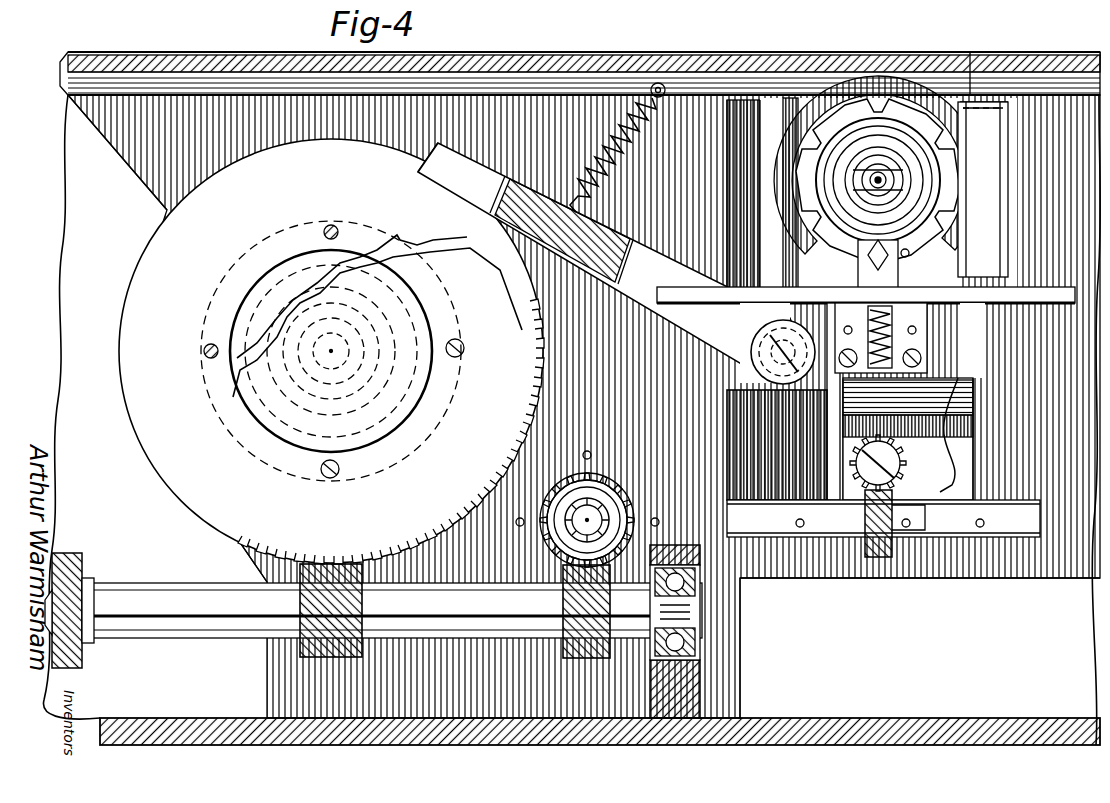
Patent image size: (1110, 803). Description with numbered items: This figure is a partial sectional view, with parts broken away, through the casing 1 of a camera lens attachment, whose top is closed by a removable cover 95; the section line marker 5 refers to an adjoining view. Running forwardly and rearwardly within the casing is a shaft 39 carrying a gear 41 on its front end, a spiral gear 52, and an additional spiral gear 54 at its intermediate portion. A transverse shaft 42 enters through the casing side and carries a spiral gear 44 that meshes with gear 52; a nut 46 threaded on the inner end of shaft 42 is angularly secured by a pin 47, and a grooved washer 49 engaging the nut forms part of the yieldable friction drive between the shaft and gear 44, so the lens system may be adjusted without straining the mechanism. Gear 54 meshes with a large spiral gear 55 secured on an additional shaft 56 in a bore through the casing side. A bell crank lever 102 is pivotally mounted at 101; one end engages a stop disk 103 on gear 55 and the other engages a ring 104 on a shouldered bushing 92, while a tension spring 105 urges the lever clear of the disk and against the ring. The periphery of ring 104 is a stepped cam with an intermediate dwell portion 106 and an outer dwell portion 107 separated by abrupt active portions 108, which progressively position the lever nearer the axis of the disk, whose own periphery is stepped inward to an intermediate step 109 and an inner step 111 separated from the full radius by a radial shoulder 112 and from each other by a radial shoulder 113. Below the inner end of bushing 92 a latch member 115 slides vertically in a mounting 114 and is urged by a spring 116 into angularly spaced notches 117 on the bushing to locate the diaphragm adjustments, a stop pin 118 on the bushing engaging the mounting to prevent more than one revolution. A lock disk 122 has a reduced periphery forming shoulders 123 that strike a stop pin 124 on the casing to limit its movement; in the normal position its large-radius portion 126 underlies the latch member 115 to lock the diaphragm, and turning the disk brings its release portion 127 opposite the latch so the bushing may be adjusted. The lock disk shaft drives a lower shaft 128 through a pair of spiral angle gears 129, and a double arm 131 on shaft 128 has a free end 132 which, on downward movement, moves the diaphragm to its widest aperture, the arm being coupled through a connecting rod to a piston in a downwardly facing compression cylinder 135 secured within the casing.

The casing 1 is at (362, 745).
The section line 5 is at (40, 34).
The shaft 39 is at (150, 590).
The gear 41 is at (70, 560).
The transverse shaft 42 is at (600, 520).
The spiral gear 44 is at (622, 500).
The nut 46 is at (565, 505).
The pin 47 is at (572, 512).
The grooved washer 49 is at (580, 519).
The spiral gear 52 is at (563, 603).
The spiral gear 54 is at (300, 600).
The large spiral gear 55 is at (270, 520).
The shaft 56 is at (310, 346).
The shouldered bushing 92 is at (900, 105).
The removable cover 95 is at (722, 60).
The pivot 101 is at (775, 365).
The bell crank lever 102 is at (690, 280).
The stop disk 103 is at (124, 300).
The ring 104 is at (886, 85).
The tension spring 105 is at (658, 82).
The intermediate dwell portion 106 is at (970, 215).
The outer dwell portion 107 is at (970, 262).
The active portions 108 is at (975, 180).
The intermediate step 109 is at (500, 215).
The inner step 111 is at (450, 447).
The radial shoulder 112 is at (440, 160).
The radial shoulder 113 is at (512, 335).
The mounting 114 is at (905, 318).
The latch member 115 is at (975, 243).
The spring 116 is at (895, 325).
The notches 117 is at (972, 102).
The stop pin 118 is at (910, 254).
The lock disk 122 is at (970, 455).
The shoulders 123 is at (830, 400).
The stop pin 124 is at (870, 555).
The portion of great radius 126 is at (955, 428).
The release peripheral portion 127 is at (940, 490).
The shaft 128 is at (925, 545).
The spiral angle gears 129 is at (905, 458).
The double arm 131 is at (980, 460).
The free end 132 is at (672, 290).
The compression cylinder 135 is at (985, 128).